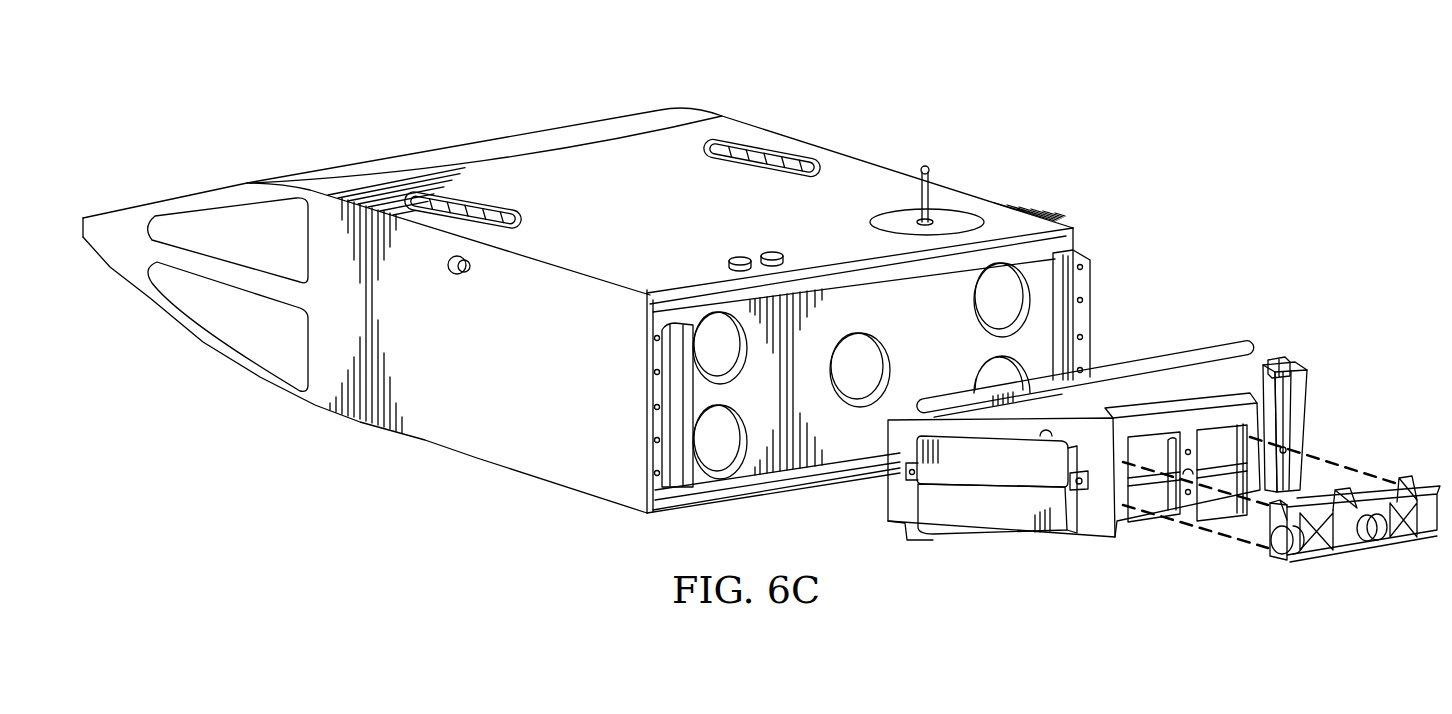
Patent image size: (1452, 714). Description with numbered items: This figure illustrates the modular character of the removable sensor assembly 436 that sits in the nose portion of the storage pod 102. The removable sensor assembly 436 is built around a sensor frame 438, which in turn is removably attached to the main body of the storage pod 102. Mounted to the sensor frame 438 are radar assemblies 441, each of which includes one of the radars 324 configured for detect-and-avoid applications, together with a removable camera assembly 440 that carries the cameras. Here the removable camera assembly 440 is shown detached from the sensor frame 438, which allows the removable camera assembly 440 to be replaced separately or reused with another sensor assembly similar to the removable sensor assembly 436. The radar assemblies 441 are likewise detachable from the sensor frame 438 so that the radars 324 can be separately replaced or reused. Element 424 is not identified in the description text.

The storage pod 102 is at (349, 85).
The radar 324 is at (1010, 520).
The removable sensor assembly 436 is at (1141, 452).
The sensor frame 438 is at (1120, 530).
The removable camera assembly 440 is at (1380, 562).
The radar assembly 441 is at (1092, 488).
The mounting plate 424 is at (1310, 386).